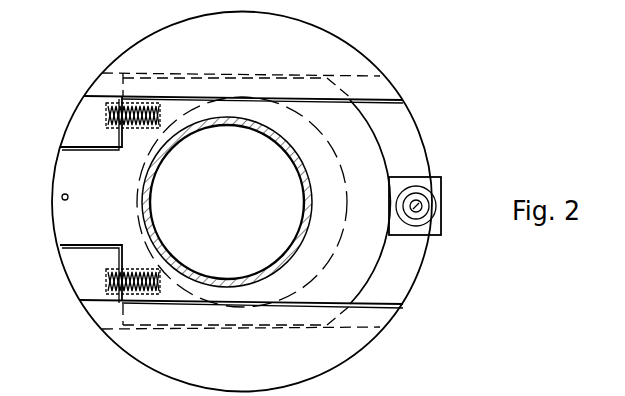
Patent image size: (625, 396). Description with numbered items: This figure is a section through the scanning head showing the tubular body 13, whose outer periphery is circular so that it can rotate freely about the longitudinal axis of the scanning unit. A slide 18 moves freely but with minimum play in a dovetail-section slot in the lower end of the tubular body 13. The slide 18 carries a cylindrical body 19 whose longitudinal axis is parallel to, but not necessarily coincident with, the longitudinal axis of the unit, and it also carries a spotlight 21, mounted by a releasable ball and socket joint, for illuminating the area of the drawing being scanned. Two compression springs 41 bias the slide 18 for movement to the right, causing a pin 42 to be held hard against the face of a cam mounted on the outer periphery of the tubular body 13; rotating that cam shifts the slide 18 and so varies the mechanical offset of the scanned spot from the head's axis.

The tubular body 13 is at (408, 138).
The slide 18 is at (65, 163).
The cylindrical body 19 is at (303, 226).
The spotlight 21 is at (422, 207).
The compression springs 41 is at (146, 138).
The pin 42 is at (62, 198).